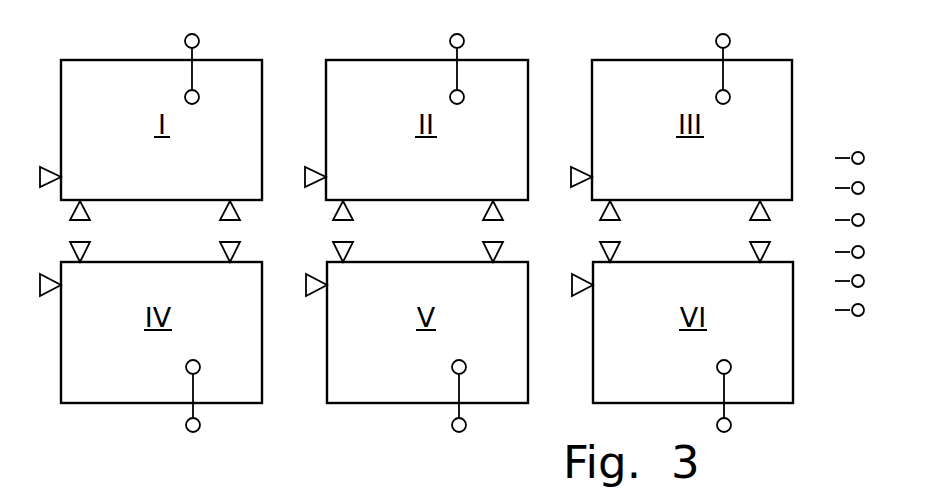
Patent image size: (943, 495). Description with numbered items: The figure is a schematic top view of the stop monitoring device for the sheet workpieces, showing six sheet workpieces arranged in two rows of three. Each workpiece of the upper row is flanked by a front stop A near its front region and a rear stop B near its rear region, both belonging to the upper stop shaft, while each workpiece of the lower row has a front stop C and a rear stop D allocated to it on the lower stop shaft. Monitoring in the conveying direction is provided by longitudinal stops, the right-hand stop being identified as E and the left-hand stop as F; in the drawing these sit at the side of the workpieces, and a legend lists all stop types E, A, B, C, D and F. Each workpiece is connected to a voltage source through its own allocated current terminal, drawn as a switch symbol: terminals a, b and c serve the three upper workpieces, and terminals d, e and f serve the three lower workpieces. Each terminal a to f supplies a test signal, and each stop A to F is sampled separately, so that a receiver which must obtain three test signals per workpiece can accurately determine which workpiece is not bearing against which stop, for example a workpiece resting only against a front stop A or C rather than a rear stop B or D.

The current terminal a is at (192, 72).
The current terminal b is at (457, 72).
The current terminal c is at (723, 72).
The current terminal d is at (193, 393).
The current terminal e is at (459, 393).
The current terminal f is at (724, 393).
The front stop A is at (87, 213).
The rear stop B is at (237, 213).
The front stop C is at (87, 247).
The rear stop D is at (237, 247).
The right-hand longitudinal stop E is at (40, 167).
The left-hand longitudinal stop F is at (47, 291).